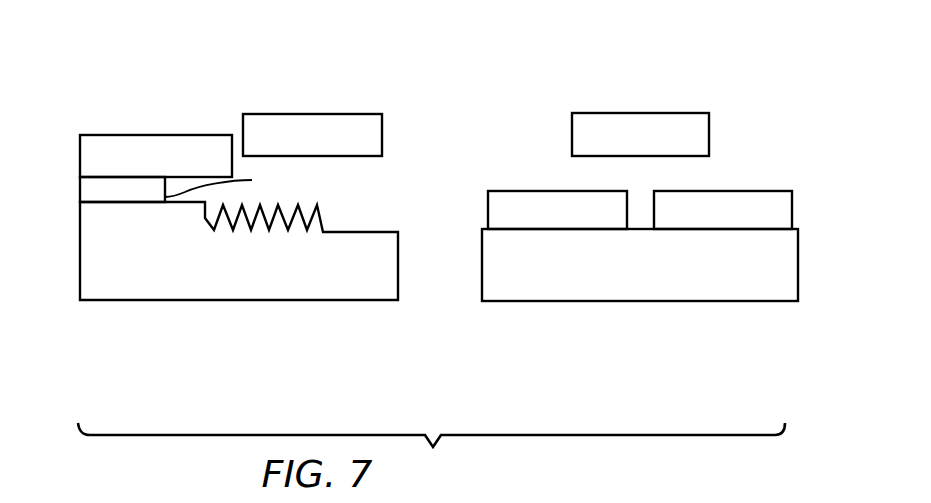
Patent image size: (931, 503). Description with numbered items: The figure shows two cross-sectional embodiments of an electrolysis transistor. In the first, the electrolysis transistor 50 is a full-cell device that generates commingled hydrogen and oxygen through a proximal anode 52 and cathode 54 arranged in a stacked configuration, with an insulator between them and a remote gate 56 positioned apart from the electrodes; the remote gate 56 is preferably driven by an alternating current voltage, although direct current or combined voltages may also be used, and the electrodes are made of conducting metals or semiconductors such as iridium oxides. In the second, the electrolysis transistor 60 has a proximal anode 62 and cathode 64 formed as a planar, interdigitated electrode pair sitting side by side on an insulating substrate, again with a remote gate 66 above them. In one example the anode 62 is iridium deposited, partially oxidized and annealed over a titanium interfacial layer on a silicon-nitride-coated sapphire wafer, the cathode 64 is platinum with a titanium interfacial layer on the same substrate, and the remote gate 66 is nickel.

The electrolysis transistor 50 is at (125, 67).
The anode 52 is at (193, 134).
The cathode 54 is at (80, 242).
The remote gate 56 is at (329, 112).
The electrolysis transistor 60 is at (738, 65).
The anode 62 is at (752, 191).
The cathode 64 is at (537, 191).
The remote gate 66 is at (657, 112).